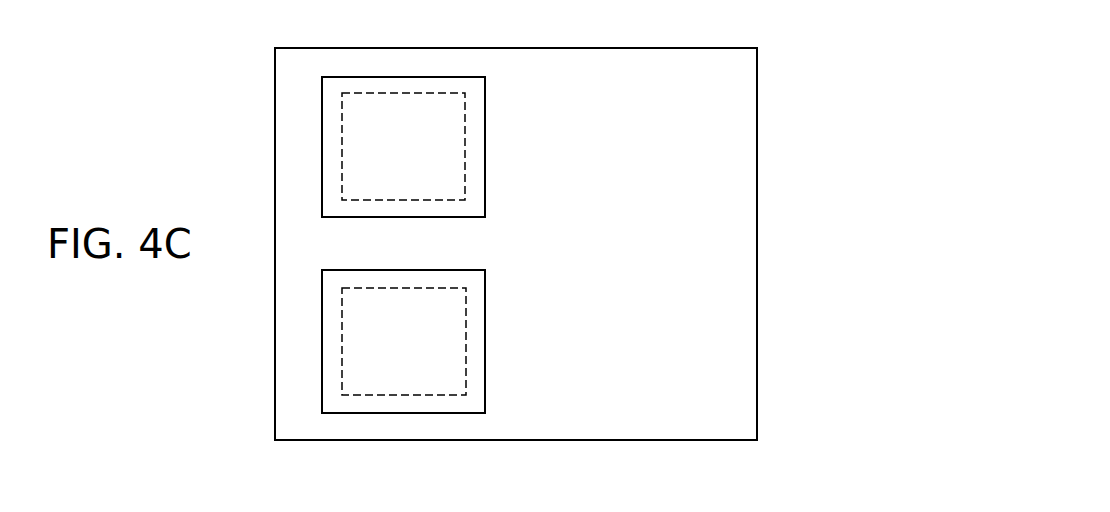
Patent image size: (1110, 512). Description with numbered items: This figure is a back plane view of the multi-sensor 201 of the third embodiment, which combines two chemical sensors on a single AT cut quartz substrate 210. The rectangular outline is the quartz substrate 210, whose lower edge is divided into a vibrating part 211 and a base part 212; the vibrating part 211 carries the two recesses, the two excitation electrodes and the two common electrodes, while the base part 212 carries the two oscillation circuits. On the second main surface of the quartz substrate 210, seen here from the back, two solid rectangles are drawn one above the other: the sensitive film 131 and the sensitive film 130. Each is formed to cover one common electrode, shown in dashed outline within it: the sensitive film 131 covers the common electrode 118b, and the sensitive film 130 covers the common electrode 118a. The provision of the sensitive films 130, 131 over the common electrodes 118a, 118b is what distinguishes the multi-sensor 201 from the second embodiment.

The quartz substrate 210 is at (718, 44).
The multi-sensor 201 is at (832, 70).
The sensitive film 131 is at (333, 113).
The common electrode 118b is at (358, 155).
The sensitive film 130 is at (333, 303).
The common electrode 118a is at (358, 347).
The vibrating part 211 is at (404, 441).
The base part 212 is at (616, 441).